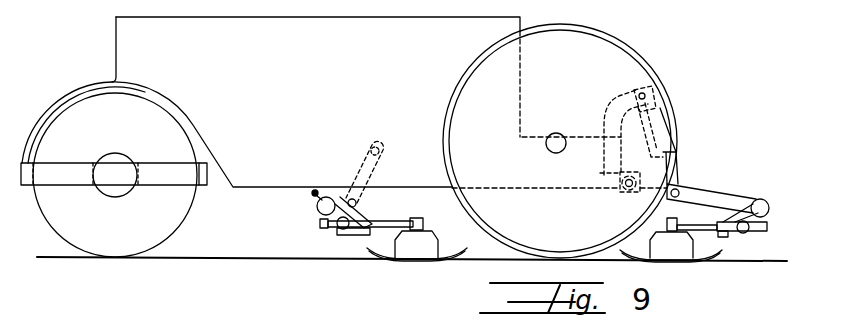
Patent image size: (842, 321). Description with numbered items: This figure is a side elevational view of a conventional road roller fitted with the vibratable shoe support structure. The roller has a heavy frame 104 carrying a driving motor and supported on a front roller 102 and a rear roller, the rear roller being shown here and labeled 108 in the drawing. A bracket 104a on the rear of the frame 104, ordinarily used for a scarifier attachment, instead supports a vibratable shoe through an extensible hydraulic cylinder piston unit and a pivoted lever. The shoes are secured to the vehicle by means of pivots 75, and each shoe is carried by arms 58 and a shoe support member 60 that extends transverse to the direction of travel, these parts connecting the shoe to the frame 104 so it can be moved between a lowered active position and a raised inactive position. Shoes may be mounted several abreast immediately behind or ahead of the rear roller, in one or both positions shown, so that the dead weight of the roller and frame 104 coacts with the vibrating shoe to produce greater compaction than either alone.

The front roller 102 is at (180, 227).
The frame 104 is at (344, 102).
The bracket 104a is at (612, 108).
The drive wheel 108 is at (641, 60).
The pivots 75 is at (312, 195).
The shoe support member 60 is at (317, 208).
The arms 58 is at (402, 215).